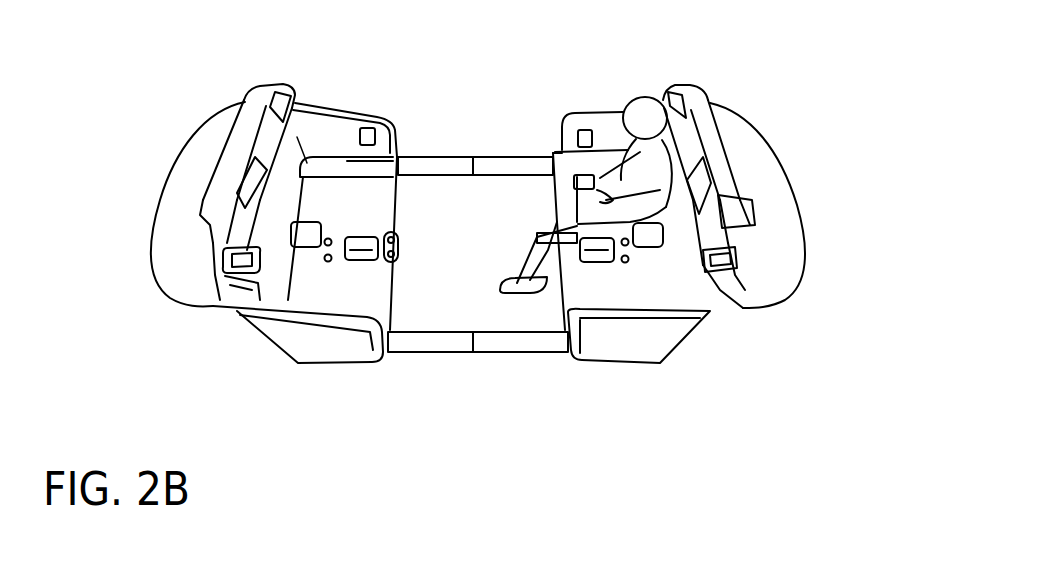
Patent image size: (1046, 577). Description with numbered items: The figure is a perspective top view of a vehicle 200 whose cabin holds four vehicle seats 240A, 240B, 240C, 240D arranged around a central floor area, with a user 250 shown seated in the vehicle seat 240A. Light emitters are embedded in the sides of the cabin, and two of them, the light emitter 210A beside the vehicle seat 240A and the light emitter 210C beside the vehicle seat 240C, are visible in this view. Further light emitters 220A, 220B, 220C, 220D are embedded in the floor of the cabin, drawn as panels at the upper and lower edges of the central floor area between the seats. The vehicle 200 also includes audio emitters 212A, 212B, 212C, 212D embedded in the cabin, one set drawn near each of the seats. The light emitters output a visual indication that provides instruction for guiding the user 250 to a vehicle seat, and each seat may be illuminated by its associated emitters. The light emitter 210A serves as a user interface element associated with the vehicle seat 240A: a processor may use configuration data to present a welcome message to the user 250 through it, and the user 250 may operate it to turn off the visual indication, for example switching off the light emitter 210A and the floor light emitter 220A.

The vehicle 200 is at (263, 342).
The light emitter 210A is at (587, 128).
The light emitter 210C is at (363, 132).
The audio emitters 212A is at (715, 105).
The audio emitters 212B is at (738, 193).
The audio emitters 212C is at (267, 113).
The audio emitters 212D is at (210, 200).
The light emitter 220A is at (510, 160).
The light emitter 220B is at (528, 343).
The light emitter 220C is at (433, 160).
The light emitter 220D is at (433, 338).
The vehicle seat 240A is at (688, 102).
The vehicle seat 240B is at (680, 238).
The vehicle seat 240C is at (263, 107).
The vehicle seat 240D is at (217, 300).
The user 250 is at (667, 157).